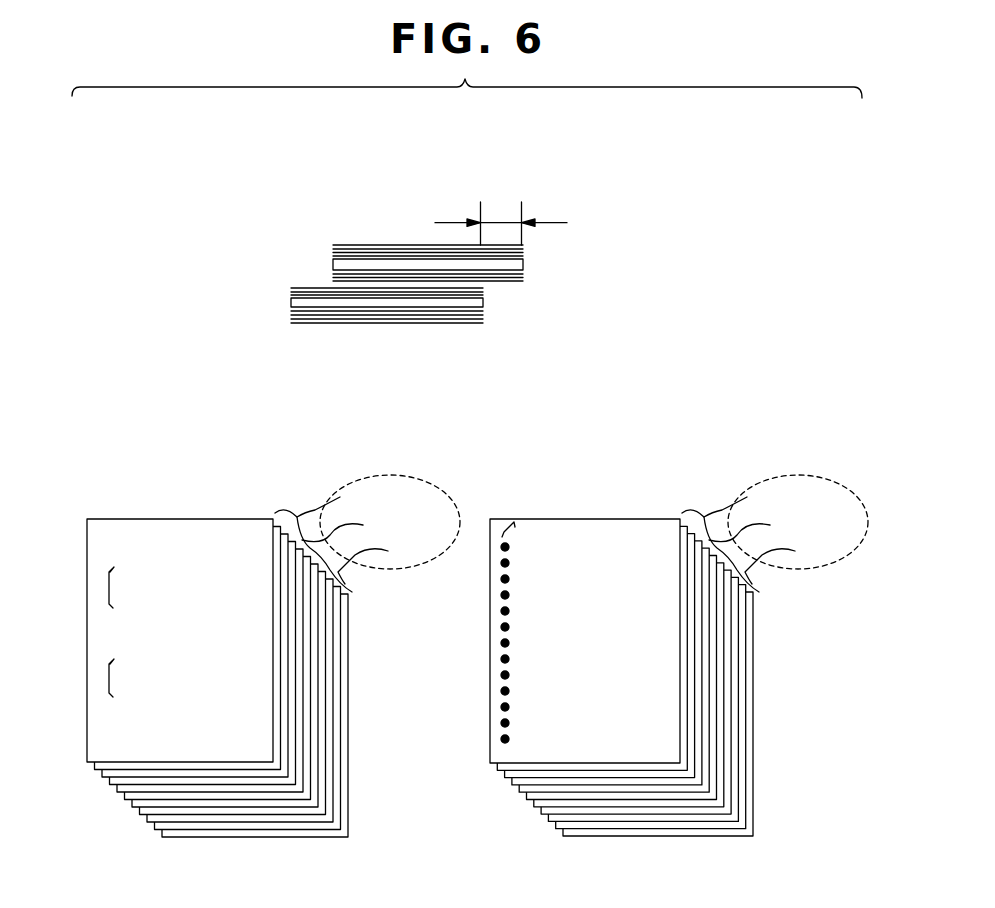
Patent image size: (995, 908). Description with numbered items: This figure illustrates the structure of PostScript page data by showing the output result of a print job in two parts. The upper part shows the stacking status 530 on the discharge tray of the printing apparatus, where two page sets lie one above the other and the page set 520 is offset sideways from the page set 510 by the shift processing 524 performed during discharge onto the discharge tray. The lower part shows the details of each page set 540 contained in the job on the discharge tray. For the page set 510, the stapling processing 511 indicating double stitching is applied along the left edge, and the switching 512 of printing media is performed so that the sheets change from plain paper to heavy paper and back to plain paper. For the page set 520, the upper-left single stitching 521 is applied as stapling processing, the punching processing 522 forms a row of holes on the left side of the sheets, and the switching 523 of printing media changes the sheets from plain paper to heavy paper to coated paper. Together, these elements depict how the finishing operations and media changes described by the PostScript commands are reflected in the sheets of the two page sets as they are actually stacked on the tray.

The stacking status 530 is at (333, 179).
The shift processing 524 is at (497, 221).
The page set 520 is at (527, 244).
The page set 510 is at (487, 287).
The details of each page set 540 is at (131, 411).
The stapling processing 511 is at (110, 568).
The switching of printing media 512 is at (388, 474).
The upper-left single stitching 521 is at (508, 525).
The punching processing 522 is at (502, 611).
The switching of printing media 523 is at (797, 474).